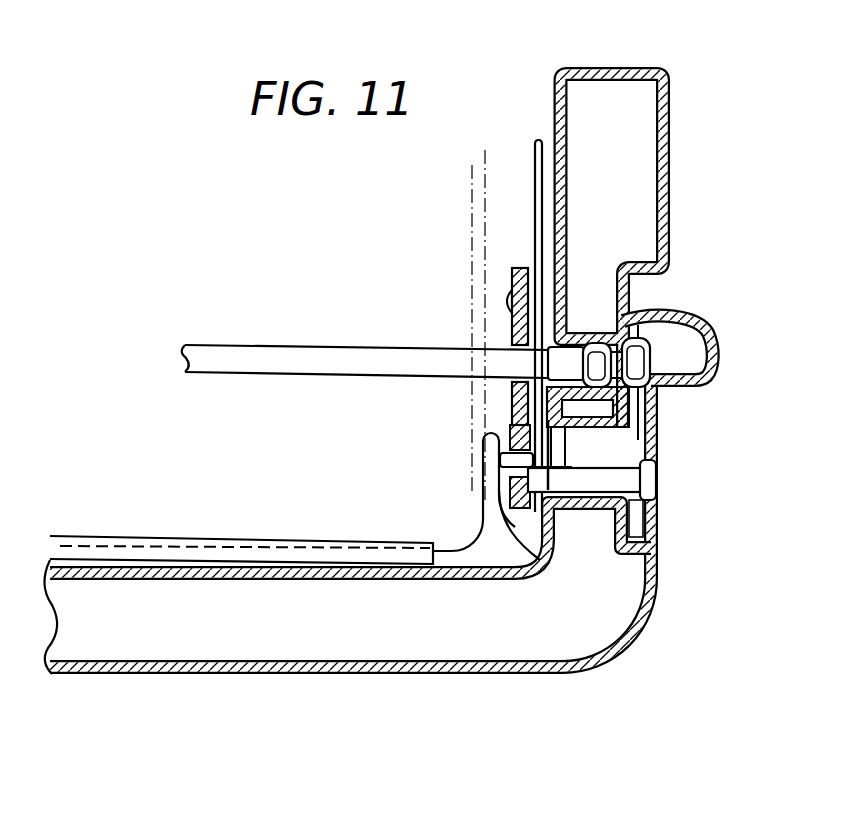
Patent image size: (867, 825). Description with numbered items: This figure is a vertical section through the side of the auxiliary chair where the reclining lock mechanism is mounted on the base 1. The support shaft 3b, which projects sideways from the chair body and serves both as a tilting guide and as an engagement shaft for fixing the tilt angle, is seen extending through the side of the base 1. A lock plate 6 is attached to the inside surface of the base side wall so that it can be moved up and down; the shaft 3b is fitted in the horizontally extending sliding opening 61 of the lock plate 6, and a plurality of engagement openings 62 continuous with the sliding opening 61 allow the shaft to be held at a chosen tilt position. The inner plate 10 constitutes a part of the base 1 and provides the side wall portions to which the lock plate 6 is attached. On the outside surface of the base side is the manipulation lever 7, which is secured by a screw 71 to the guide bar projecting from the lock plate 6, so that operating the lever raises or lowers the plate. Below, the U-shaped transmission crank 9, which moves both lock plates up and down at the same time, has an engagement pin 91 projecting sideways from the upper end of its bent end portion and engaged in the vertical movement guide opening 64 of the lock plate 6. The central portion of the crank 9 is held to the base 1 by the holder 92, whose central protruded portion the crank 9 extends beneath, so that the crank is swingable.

The base 1 is at (612, 68).
The support shaft 3b is at (277, 362).
The lock plate 6 is at (474, 322).
The manipulation lever 7 is at (697, 330).
The transmission crank 9 is at (480, 543).
The inner plate 10 is at (537, 148).
The sliding opening 61 is at (515, 406).
The engagement opening 62 is at (507, 338).
The vertical movement guide opening 64 is at (557, 511).
The screw 71 is at (603, 480).
The engagement pin 91 is at (508, 458).
The holder 92 is at (287, 521).